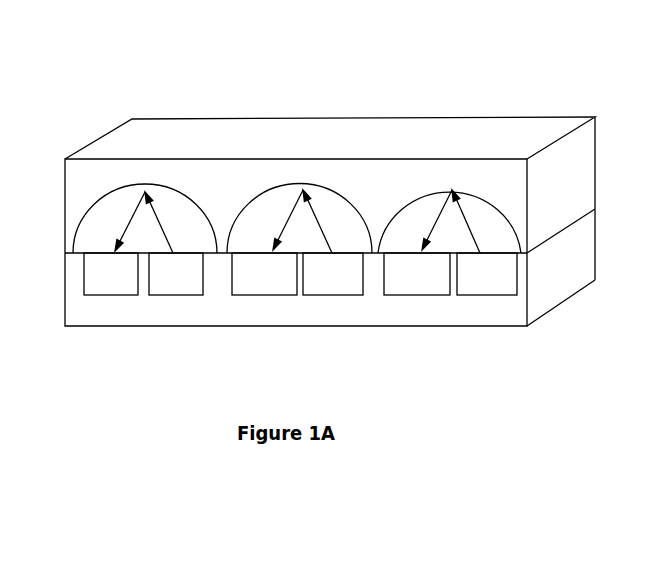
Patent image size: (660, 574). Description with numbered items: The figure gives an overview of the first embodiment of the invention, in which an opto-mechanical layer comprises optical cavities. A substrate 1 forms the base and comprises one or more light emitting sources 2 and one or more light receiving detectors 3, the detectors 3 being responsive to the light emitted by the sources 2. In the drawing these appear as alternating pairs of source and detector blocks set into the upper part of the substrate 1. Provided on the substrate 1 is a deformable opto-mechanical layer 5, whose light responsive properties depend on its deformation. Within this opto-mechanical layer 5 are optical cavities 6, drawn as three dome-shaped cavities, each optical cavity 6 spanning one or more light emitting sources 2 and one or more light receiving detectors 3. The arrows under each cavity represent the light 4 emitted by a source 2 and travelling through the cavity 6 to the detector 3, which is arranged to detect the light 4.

The substrate 1 is at (563, 284).
The light emitting source 2 is at (481, 304).
The light receiving detector 3 is at (418, 304).
The light 4 is at (329, 220).
The opto-mechanical layer 5 is at (221, 170).
The optical cavity 6 is at (105, 213).